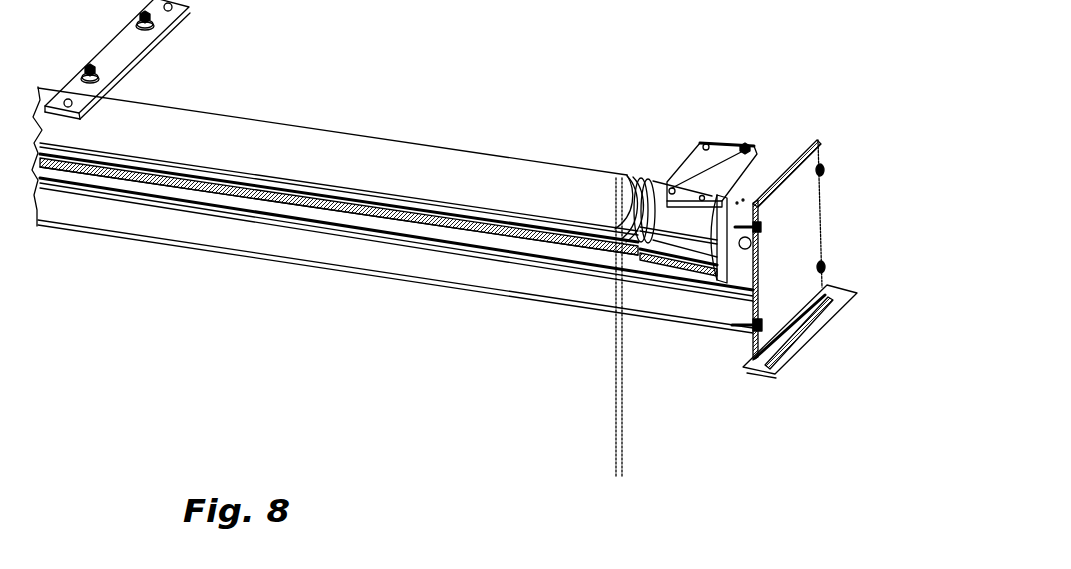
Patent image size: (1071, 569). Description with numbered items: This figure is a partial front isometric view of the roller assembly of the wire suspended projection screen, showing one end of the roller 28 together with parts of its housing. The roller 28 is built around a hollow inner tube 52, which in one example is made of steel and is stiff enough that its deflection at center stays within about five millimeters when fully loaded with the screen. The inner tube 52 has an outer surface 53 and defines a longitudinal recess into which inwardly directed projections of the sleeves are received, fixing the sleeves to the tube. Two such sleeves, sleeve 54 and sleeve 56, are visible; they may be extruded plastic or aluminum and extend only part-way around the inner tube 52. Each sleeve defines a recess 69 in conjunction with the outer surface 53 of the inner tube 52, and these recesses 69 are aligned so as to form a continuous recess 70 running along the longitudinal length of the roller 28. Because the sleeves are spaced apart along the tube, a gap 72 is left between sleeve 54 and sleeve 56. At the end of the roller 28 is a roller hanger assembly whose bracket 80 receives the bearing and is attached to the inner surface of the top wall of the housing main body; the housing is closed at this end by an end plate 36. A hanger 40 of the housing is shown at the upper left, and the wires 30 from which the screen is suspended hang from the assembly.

The roller 28 is at (330, 143).
The wires 30 is at (617, 400).
The end plate 36 is at (800, 235).
The hangers 40 is at (118, 57).
The hollow inner tube 52 is at (507, 240).
The outer surface 53 is at (200, 197).
The sleeve 54 is at (683, 230).
The sleeve 56 is at (455, 162).
The recess 69 is at (335, 235).
The recess 70 is at (432, 250).
The gap 72 is at (644, 152).
The bracket 80 is at (745, 143).